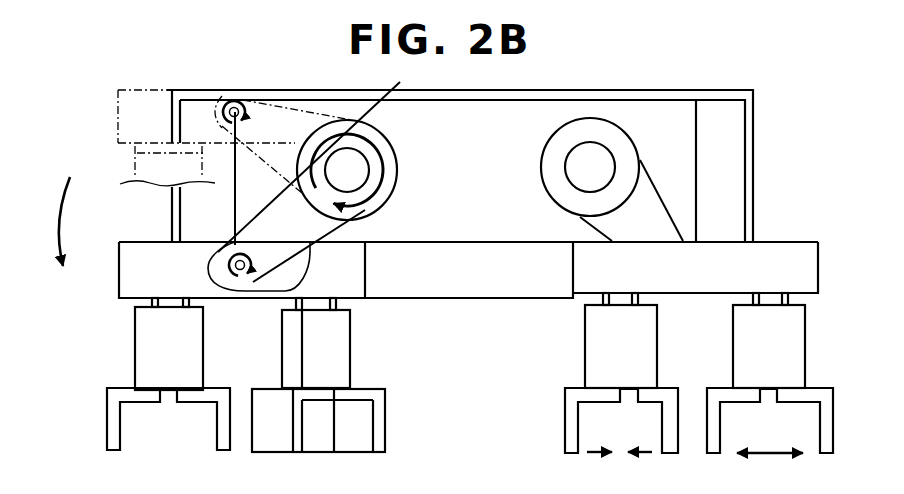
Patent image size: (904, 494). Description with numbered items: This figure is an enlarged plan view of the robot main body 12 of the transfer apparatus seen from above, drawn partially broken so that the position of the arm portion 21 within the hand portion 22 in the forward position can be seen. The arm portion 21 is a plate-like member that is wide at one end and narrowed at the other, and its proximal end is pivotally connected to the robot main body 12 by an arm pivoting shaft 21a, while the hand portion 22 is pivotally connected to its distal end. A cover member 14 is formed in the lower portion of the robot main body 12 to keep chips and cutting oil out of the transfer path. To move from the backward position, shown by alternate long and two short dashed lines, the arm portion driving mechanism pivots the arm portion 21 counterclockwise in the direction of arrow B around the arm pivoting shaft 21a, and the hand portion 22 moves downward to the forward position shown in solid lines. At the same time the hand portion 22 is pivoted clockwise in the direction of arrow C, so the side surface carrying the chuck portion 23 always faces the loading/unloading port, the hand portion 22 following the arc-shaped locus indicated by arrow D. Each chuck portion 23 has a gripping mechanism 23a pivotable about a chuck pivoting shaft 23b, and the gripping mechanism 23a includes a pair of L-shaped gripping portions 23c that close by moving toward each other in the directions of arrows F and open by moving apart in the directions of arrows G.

The robot main body 12 is at (492, 122).
The cover member 14 is at (520, 296).
The arm portion 21 is at (318, 225).
The arm pivoting shaft 21a is at (347, 190).
The hand portion 22 is at (167, 89).
The chuck portion 23 is at (450, 373).
The gripping mechanism 23a is at (146, 347).
The chuck pivoting shaft 23b is at (152, 300).
The gripping portion 23c is at (223, 425).
The arrow B is at (318, 155).
The arrow C is at (243, 102).
The arrow D is at (55, 221).
The arrows F is at (619, 437).
The arrows G is at (770, 438).